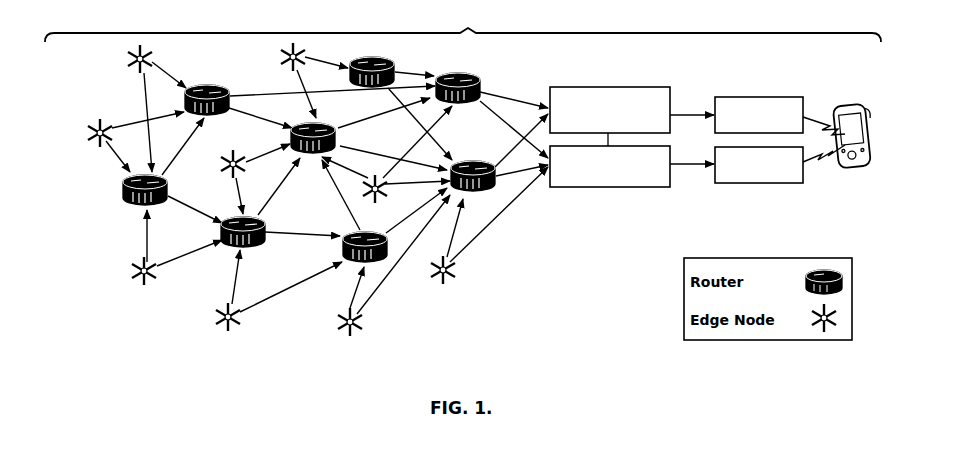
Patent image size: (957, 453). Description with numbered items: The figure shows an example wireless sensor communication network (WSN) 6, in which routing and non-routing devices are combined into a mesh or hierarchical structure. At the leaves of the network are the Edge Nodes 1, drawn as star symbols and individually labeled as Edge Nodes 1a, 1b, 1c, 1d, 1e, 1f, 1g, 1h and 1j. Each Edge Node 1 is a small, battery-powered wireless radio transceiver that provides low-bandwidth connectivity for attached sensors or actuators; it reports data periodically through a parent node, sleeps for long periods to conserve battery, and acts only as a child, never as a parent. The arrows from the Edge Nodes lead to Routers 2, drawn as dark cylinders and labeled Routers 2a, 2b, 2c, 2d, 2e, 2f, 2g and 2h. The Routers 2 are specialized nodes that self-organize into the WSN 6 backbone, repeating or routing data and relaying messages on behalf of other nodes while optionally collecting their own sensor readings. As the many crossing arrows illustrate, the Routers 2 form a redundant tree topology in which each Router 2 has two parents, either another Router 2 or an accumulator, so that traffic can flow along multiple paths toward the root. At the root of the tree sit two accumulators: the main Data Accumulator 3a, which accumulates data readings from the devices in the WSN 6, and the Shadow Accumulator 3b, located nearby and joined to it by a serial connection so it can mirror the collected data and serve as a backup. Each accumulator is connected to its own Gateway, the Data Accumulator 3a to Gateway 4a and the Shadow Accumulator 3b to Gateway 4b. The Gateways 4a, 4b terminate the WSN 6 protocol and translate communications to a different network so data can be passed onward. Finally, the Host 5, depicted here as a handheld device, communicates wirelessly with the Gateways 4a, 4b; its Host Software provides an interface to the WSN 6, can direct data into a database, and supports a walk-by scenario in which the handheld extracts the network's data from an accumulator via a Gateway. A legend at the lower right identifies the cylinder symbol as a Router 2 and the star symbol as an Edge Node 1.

The Edge Node 1 is at (844, 314).
The Edge Node 1a is at (138, 286).
The Edge Node 1b is at (218, 326).
The Edge Node 1c is at (335, 325).
The Edge Node 1d is at (460, 271).
The Edge Node 1e is at (86, 136).
The Edge Node 1f is at (218, 165).
The Edge Node 1g is at (366, 191).
The Edge Node 1h is at (124, 62).
The Edge Node 1j is at (280, 58).
The Router 2 is at (850, 278).
The Router 2a is at (121, 196).
The Router 2b is at (219, 234).
The Router 2c is at (369, 236).
The Router 2d is at (208, 84).
The Router 2e is at (332, 124).
The Router 2f is at (469, 163).
The Router 2g is at (394, 58).
The Router 2h is at (482, 75).
The Data Accumulator 3a is at (617, 87).
The Shadow Accumulator 3b is at (612, 191).
The Gateway 4a is at (746, 94).
The Gateway 4b is at (750, 186).
The Host 5 is at (839, 106).
The wireless sensor communication network (WSN) 6 is at (463, 25).